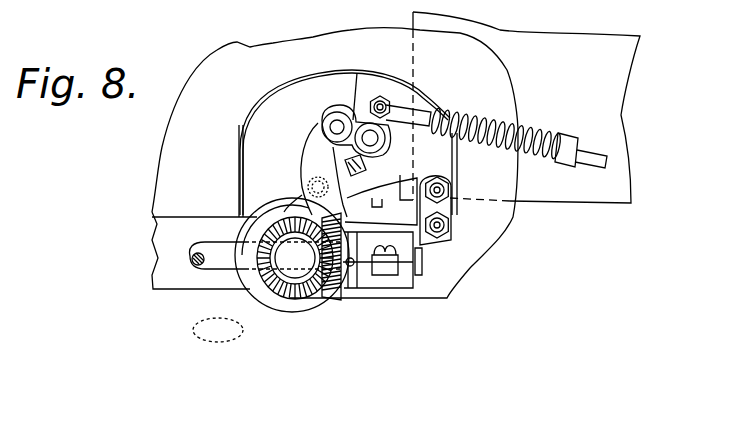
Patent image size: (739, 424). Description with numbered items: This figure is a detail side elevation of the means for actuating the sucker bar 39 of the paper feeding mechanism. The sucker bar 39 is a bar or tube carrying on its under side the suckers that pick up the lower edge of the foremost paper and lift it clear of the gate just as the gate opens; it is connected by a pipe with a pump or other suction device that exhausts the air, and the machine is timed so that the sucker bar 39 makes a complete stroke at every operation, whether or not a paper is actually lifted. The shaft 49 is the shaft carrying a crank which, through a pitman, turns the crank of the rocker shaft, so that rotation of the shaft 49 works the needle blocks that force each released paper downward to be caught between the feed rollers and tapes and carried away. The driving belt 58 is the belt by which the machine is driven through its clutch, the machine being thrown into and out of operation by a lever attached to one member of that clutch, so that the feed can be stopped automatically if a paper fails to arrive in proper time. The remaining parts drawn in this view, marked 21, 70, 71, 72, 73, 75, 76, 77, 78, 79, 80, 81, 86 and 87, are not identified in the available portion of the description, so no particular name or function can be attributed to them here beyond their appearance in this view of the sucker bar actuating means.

The housing 21 is at (183, 173).
The sucker bar 39 is at (325, 110).
The pawl spring 75 is at (357, 122).
The pin 80 is at (398, 110).
The coil spring 79 is at (540, 134).
The plate 72 is at (608, 108).
The lever 71 is at (322, 130).
The arm 76 is at (280, 187).
The driving belt 58 is at (360, 180).
The link 81 is at (388, 123).
The bolts 87 is at (452, 208).
The shaft 70 is at (227, 255).
The shaft 49 is at (266, 280).
The gear 78 is at (280, 305).
The casing 73 is at (305, 308).
The bevel gear 77 is at (334, 280).
The bracket 86 is at (387, 195).